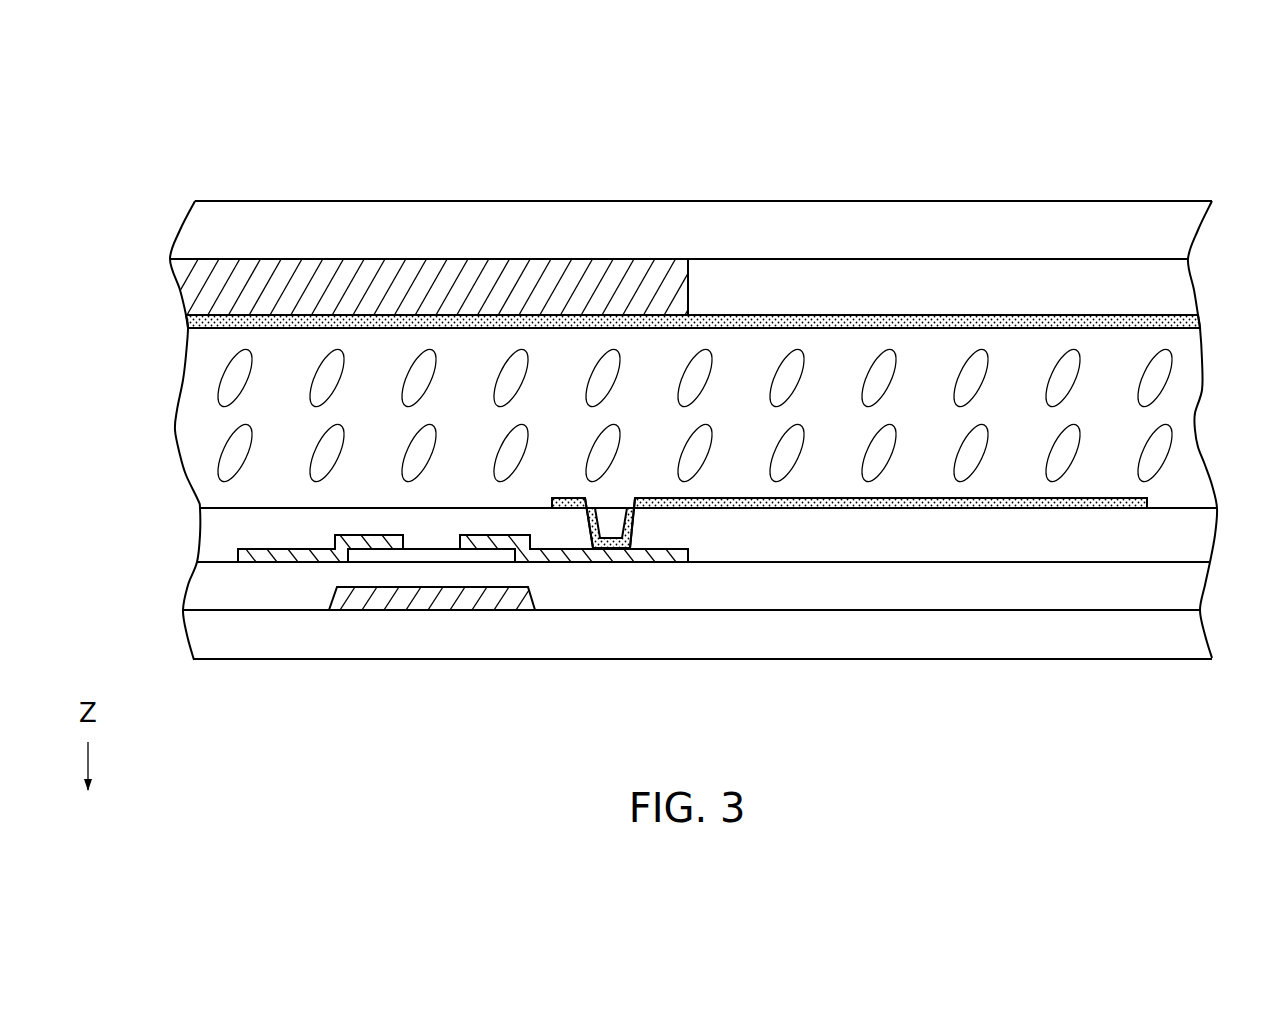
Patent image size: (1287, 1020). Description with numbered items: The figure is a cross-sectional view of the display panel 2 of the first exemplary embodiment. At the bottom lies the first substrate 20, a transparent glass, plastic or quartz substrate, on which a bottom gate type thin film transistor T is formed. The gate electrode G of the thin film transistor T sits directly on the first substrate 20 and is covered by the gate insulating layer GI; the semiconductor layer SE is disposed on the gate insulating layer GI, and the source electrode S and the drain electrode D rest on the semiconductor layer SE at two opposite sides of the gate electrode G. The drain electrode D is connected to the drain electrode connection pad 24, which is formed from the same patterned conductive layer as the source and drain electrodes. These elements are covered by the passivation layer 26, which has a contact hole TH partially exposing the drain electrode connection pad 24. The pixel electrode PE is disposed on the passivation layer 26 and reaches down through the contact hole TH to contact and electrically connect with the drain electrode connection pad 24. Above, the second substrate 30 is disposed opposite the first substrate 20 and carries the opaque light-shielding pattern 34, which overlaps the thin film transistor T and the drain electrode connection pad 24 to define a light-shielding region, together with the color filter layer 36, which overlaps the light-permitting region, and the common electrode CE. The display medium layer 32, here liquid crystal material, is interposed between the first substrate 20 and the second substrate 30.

The display panel 2 is at (1158, 144).
The second substrate 30 is at (200, 231).
The light-shielding pattern 34 is at (200, 294).
The color filter layer 36 is at (1178, 296).
The common electrode CE is at (1182, 330).
The display medium layer 32 is at (200, 426).
The pixel electrode PE is at (1147, 501).
The contact hole TH is at (607, 497).
The passivation layer 26 is at (200, 536).
The gate insulating layer GI is at (200, 587).
The first substrate 20 is at (200, 639).
The thin film transistor T is at (455, 654).
The source electrode S is at (370, 538).
The gate electrode G is at (405, 598).
The semiconductor layer SE is at (447, 553).
The drain electrode D is at (500, 540).
The drain electrode connection pad 24 is at (620, 556).